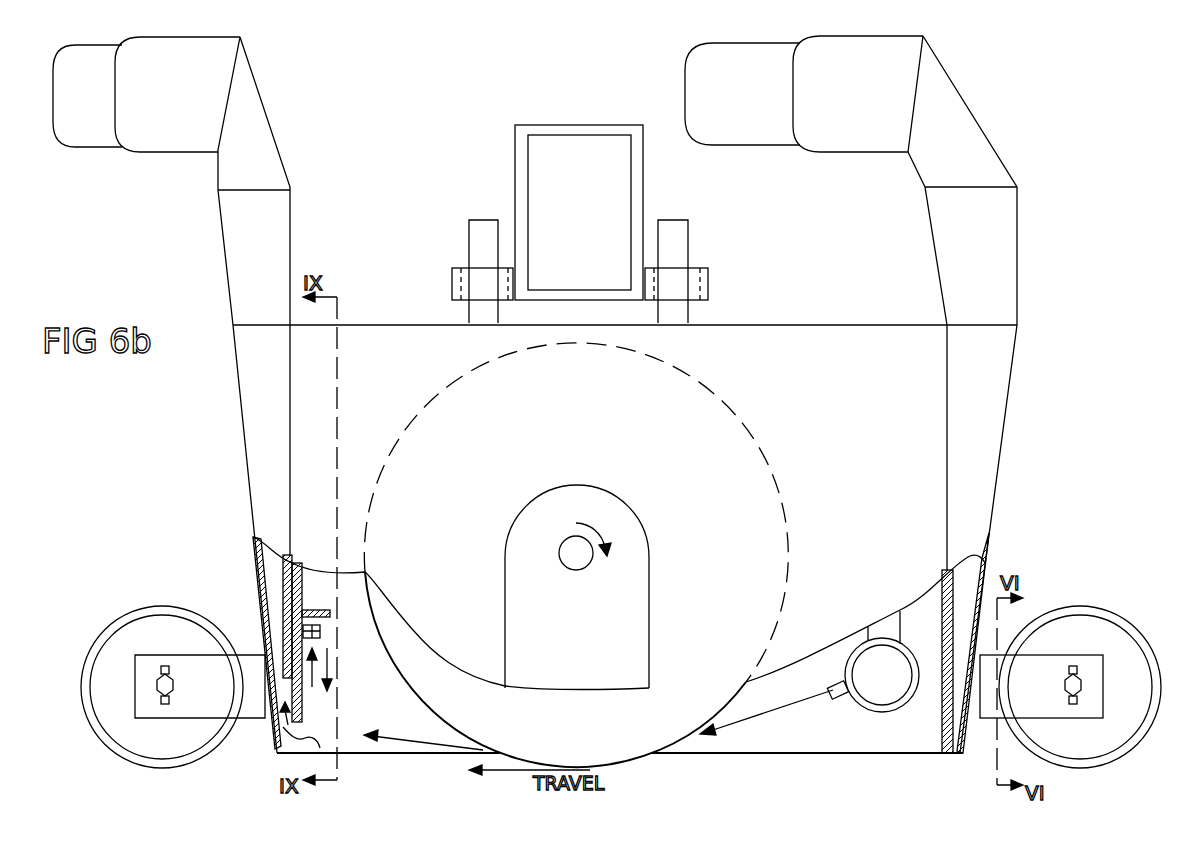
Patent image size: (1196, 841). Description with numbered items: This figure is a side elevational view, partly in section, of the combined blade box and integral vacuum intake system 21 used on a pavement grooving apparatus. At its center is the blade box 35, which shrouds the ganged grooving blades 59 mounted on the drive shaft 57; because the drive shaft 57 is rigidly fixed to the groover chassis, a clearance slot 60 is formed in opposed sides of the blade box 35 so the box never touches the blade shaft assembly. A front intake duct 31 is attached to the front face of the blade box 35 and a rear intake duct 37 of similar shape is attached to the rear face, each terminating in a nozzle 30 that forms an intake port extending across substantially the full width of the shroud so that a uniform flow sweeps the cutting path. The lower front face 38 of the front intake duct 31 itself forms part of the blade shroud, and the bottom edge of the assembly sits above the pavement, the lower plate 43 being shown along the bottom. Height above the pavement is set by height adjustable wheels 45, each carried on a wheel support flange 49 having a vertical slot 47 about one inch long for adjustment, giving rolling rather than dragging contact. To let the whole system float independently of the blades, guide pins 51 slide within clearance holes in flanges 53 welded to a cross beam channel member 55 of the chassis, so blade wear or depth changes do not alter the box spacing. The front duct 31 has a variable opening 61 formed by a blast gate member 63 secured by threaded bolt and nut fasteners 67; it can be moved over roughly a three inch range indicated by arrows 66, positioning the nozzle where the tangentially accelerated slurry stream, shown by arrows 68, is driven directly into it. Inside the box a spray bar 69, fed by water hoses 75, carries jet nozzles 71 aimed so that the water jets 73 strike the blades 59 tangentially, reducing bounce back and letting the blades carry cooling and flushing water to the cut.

The combined blade box and integral vacuum intake system 21 is at (1046, 278).
The nozzle 30 is at (275, 749).
The front intake duct 31 is at (250, 408).
The blade box 35 is at (852, 334).
The rear intake duct 37 is at (988, 420).
The lower front face 38 is at (253, 717).
The bottom plate 43 is at (873, 756).
The height adjustable wheel 45 is at (129, 619).
The vertical slot 47 is at (162, 674).
The wheel support flange 49 is at (210, 665).
The guide pin 51 is at (478, 233).
The flange 53 is at (455, 286).
The cross beam channel member 55 is at (640, 186).
The drive shaft 57 is at (577, 570).
The grooving blade 59 is at (638, 753).
The clearance slot 60 is at (623, 620).
The variable opening 61 is at (288, 752).
The blast gate member 63 is at (305, 717).
The arrows 66 is at (330, 667).
The threaded bolt and nut fastener 67 is at (281, 627).
The arrows 68 is at (368, 755).
The spray bar 69 is at (918, 701).
The jet nozzle 71 is at (833, 689).
The water jet 73 is at (763, 719).
The water hose 75 is at (906, 636).